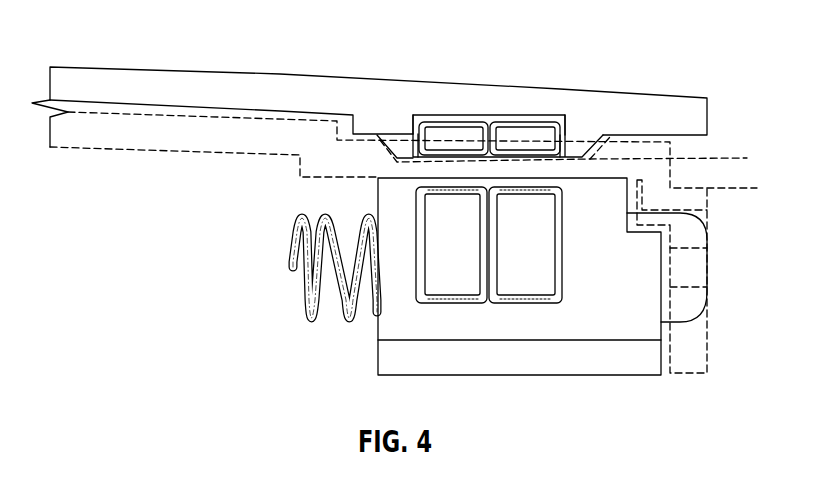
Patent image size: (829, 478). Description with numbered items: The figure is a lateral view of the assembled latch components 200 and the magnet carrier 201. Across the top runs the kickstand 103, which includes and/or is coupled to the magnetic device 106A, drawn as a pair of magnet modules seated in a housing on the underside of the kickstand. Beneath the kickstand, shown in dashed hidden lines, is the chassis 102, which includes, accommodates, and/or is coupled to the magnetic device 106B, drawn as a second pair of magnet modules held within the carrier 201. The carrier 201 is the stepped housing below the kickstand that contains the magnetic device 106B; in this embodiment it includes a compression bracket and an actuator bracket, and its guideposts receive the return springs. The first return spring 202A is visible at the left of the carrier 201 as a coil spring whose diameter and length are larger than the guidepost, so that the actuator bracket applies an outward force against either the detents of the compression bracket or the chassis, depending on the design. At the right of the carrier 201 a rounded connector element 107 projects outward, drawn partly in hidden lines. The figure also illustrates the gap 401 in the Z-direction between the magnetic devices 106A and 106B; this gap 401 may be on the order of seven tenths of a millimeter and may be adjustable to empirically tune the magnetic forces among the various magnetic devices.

The latch components 200 is at (656, 45).
The kickstand 103 is at (185, 77).
The chassis 102 is at (167, 146).
The magnetic device 106A is at (535, 135).
The magnetic device 106B is at (417, 225).
The first return spring 202A is at (300, 298).
The carrier 201 is at (632, 363).
The plug connector 107 is at (695, 270).
The gap 401 is at (747, 156).